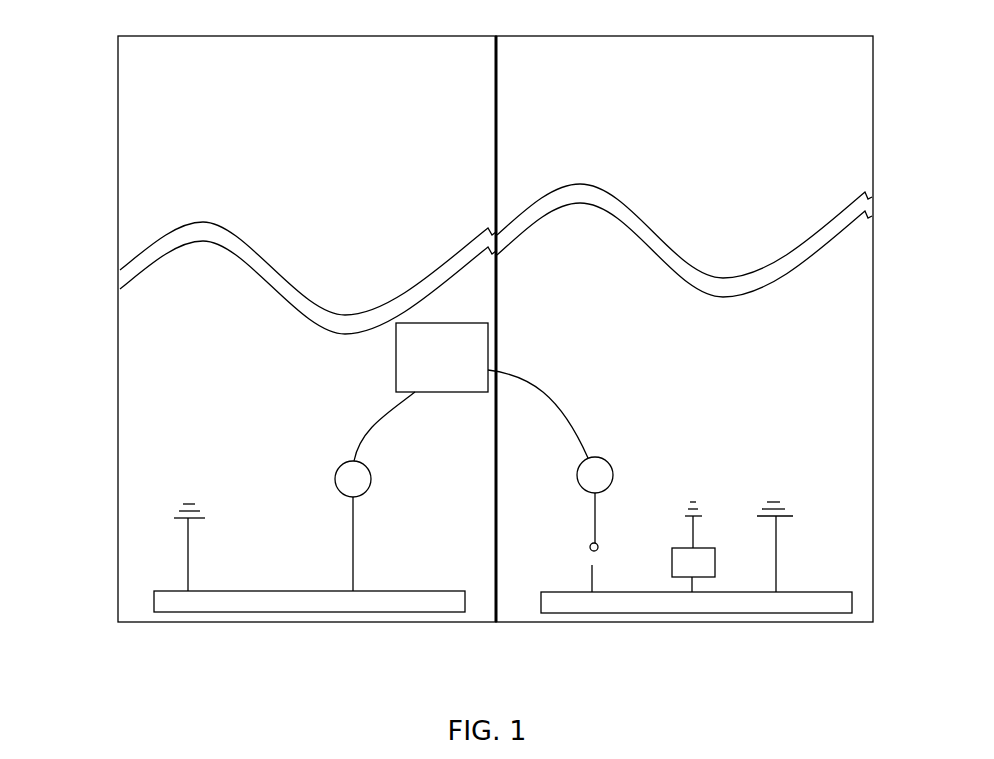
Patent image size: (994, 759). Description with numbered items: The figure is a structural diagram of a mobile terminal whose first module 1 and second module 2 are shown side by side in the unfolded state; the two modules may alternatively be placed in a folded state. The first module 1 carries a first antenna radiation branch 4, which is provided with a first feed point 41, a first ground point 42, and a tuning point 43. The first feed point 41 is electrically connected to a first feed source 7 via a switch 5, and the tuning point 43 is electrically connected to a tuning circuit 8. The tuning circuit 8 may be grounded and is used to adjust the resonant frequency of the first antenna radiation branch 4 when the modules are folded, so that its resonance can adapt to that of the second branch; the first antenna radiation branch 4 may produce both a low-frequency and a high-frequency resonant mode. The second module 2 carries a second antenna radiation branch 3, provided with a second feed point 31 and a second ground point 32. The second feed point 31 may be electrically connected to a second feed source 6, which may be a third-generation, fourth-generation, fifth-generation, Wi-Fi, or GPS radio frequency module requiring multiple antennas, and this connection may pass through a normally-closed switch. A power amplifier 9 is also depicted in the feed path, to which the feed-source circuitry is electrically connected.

The first module 1 is at (823, 87).
The second module 2 is at (165, 90).
The second antenna radiation branch 3 is at (278, 603).
The second feed point 31 is at (351, 590).
The second ground point 32 is at (187, 590).
The first antenna radiation branch 4 is at (730, 607).
The first feed point 41 is at (590, 591).
The first ground point 42 is at (778, 591).
The tuning point 43 is at (693, 591).
The switch 5 is at (590, 552).
The second feed source 6 is at (336, 480).
The first feed source 7 is at (608, 462).
The tuning circuit 8 is at (705, 547).
The power amplifier 9 is at (456, 323).